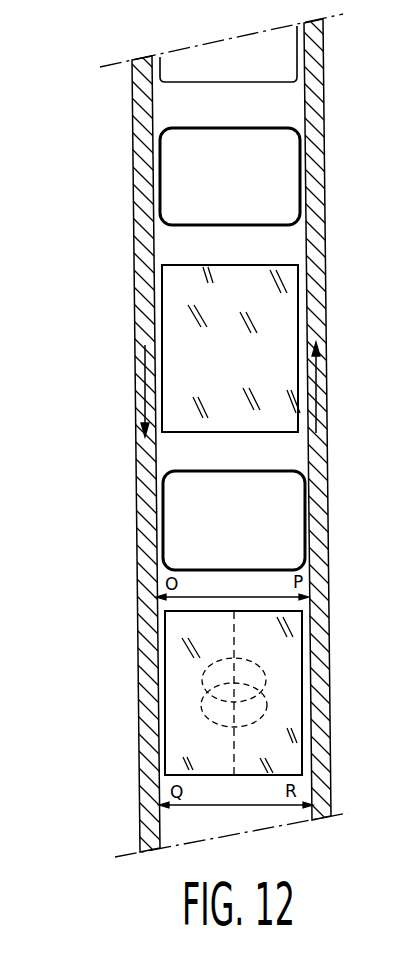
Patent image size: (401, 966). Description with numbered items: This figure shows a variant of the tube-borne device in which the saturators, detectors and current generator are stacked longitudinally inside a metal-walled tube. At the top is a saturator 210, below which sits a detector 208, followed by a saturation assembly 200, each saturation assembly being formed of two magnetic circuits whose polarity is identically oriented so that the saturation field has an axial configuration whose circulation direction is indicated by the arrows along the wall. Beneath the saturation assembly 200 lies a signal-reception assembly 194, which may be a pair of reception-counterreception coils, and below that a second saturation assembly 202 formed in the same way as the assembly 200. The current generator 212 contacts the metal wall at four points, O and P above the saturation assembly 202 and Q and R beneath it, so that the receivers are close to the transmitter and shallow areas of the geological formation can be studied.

The saturator 210 is at (150, 77).
The detector 208 is at (160, 183).
The saturation assembly 200 is at (174, 301).
The assembly comprising signal reception means 194 is at (165, 518).
The current generator 212 is at (200, 675).
The saturation assembly 202 is at (176, 745).